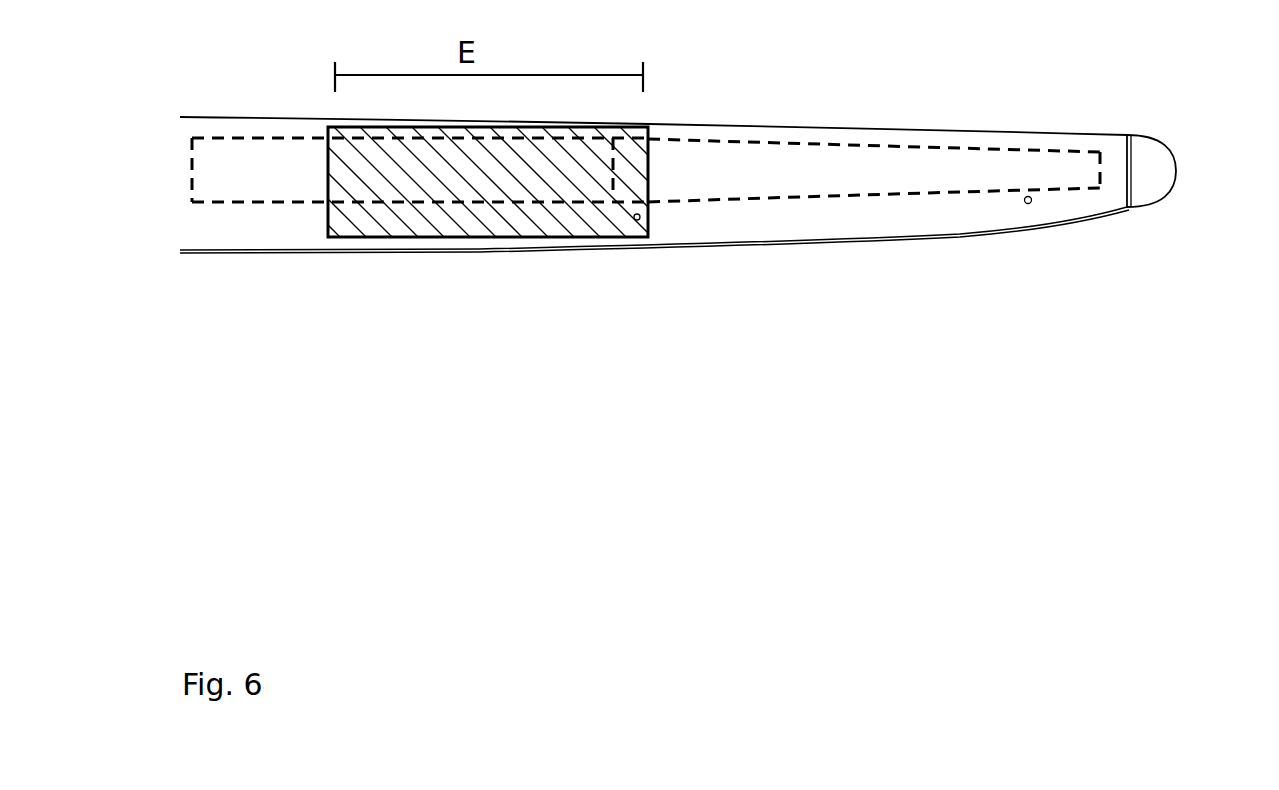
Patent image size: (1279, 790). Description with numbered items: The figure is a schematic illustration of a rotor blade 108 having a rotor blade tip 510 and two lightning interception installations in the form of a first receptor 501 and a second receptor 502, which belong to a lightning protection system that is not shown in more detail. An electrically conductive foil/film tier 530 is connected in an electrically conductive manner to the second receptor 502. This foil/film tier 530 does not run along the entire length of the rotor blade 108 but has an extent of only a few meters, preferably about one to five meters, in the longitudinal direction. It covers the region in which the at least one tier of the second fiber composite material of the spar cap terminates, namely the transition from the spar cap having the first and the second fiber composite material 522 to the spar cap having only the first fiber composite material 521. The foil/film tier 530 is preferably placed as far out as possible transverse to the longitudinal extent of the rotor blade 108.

The rotor blade 108 is at (479, 258).
The rotor blade tip 510 is at (1164, 201).
The electrically conductive foil/film tier 530 is at (604, 246).
The spar cap having the first and the second fiber composite material 522 is at (254, 209).
The spar cap having only the first fiber composite material 521 is at (836, 203).
The second receptor 502 is at (649, 236).
The first receptor 501 is at (1036, 208).